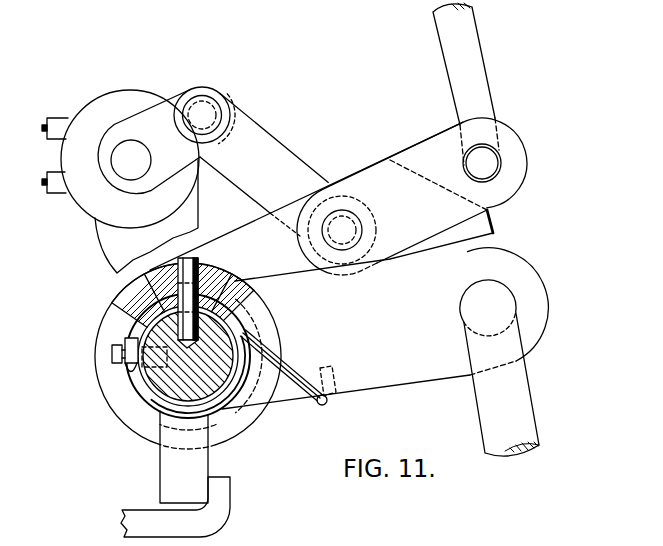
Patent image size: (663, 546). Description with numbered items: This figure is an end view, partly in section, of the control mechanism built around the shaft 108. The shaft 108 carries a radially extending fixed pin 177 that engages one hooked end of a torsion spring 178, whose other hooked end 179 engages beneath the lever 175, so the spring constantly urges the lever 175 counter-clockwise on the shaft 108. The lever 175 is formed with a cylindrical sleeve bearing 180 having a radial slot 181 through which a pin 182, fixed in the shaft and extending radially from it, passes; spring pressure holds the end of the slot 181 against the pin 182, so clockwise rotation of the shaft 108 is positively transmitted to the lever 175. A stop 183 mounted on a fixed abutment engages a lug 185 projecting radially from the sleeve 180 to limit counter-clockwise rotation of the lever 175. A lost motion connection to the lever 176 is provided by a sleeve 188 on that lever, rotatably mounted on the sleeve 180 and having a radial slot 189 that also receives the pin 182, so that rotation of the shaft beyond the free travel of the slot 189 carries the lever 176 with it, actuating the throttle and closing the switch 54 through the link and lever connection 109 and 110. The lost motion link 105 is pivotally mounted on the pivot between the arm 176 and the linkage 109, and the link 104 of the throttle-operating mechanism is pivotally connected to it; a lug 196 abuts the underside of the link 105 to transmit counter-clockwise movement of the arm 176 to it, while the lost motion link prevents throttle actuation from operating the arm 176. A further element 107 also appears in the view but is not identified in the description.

The switch 54 is at (92, 101).
The throttle linkage 104 is at (489, 82).
The lost motion link 105 is at (433, 140).
The rod 107 is at (526, 420).
The shaft 108 is at (163, 378).
The link 109 is at (276, 132).
The lever 110 is at (157, 108).
The lever 175 is at (424, 380).
The lever 176 is at (257, 227).
The fixed pin 177 is at (110, 352).
The torsion spring 178 is at (157, 404).
The hooked end 179 is at (330, 398).
The cylindrical sleeve bearing 180 is at (112, 305).
The radial slot 181 is at (158, 291).
The pin 182 is at (200, 259).
The stop 183 is at (224, 495).
The lug 185 is at (208, 460).
The sleeve 188 is at (248, 288).
The radial slot 189 is at (217, 277).
The lug 196 is at (488, 228).